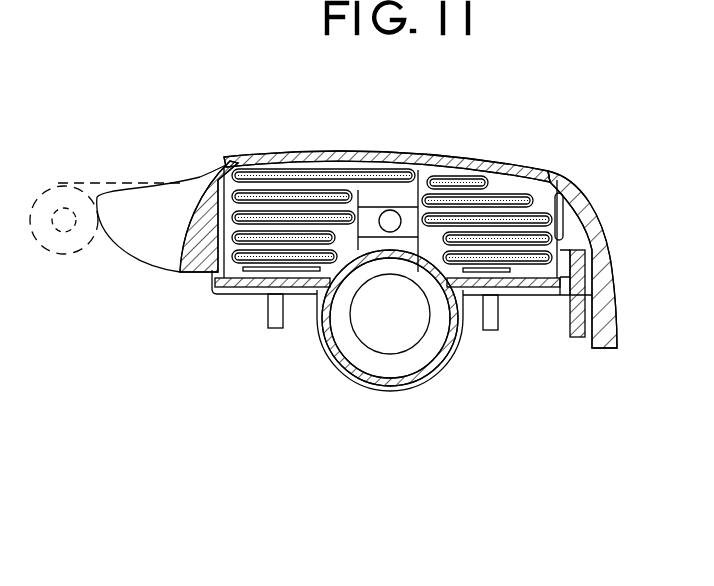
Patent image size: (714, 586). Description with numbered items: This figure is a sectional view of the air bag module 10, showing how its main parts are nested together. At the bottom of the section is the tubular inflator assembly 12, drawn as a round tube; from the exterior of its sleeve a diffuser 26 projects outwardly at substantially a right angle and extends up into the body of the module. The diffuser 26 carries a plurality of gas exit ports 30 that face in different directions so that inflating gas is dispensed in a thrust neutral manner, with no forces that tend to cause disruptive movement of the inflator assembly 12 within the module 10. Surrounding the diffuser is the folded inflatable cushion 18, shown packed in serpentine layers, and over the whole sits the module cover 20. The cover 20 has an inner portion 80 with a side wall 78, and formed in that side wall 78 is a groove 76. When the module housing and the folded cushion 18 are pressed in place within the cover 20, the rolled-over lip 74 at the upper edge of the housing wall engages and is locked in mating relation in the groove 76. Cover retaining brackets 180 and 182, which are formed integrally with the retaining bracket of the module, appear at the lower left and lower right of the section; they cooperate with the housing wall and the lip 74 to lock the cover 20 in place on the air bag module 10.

The air bag module 10 is at (560, 160).
The tubular inflator assembly 12 is at (403, 362).
The folded inflatable cushion 18 is at (326, 190).
The module cover 20 is at (252, 155).
The diffuser 26 is at (414, 208).
The gas exit ports 30 is at (391, 210).
The rolled-over lip 74 is at (215, 195).
The groove 76 is at (224, 258).
The side wall 78 is at (200, 273).
The inner portion 80 is at (183, 248).
The cover retaining bracket 180 is at (210, 291).
The cover retaining bracket 182 is at (575, 290).